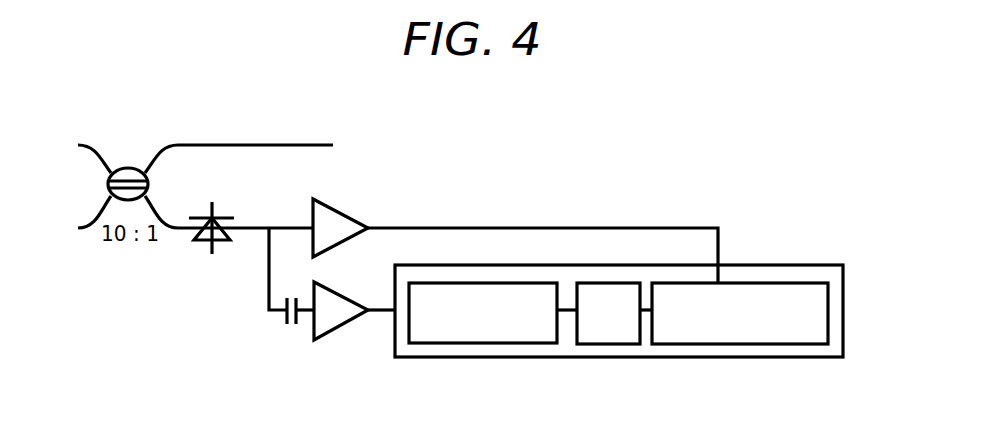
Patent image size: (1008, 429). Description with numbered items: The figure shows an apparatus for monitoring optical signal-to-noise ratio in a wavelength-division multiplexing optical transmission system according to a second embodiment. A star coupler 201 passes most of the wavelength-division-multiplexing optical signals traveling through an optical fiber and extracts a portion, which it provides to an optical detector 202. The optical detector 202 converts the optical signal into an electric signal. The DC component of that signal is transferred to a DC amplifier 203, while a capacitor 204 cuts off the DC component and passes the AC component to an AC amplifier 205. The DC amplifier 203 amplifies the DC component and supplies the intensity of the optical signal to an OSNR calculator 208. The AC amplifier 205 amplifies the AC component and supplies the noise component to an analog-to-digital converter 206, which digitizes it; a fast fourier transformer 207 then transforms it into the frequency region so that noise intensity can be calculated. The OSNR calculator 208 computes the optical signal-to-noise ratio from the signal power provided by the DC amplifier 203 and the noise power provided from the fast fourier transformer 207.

The star coupler 201 is at (155, 185).
The optical detector 202 is at (203, 240).
The DC amplifier 203 is at (335, 208).
The capacitor 204 is at (283, 325).
The AC amplifier 205 is at (342, 326).
The analog-to-digital converter 206 is at (478, 344).
The fast fourier transformer 207 is at (612, 345).
The OSNR calculator 208 is at (723, 345).